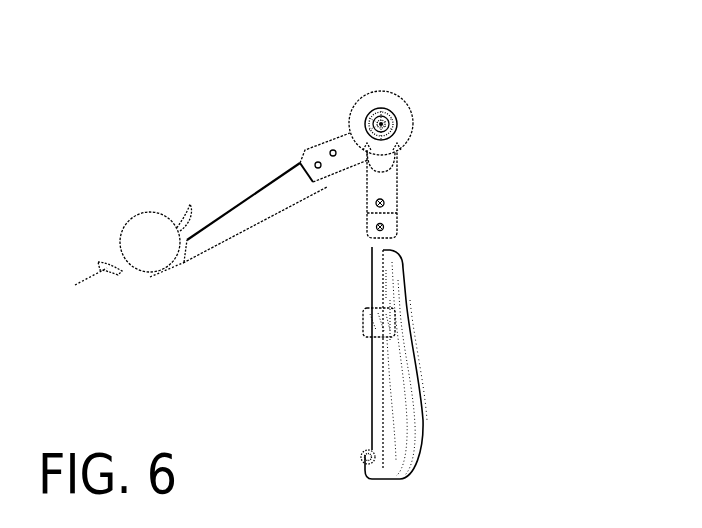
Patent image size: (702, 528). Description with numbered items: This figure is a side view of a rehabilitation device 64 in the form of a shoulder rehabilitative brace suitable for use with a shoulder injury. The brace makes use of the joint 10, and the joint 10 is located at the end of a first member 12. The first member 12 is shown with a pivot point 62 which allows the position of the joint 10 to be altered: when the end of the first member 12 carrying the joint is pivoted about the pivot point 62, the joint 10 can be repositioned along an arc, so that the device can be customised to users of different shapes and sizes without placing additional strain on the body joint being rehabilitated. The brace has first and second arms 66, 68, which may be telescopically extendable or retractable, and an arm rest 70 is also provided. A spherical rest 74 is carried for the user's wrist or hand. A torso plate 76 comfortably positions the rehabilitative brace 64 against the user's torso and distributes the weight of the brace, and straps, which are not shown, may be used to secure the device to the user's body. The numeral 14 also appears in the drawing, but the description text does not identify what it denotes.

The joint 10 is at (418, 100).
The first member 12 is at (422, 160).
The pivot wheel 14 is at (343, 107).
The pivot point 62 is at (407, 207).
The rehabilitation device 64 is at (153, 148).
The first arm 66 is at (423, 327).
The second arm 68 is at (253, 193).
The arm rest 70 is at (114, 284).
The spherical rest 74 is at (155, 253).
The torso plate 76 is at (420, 412).